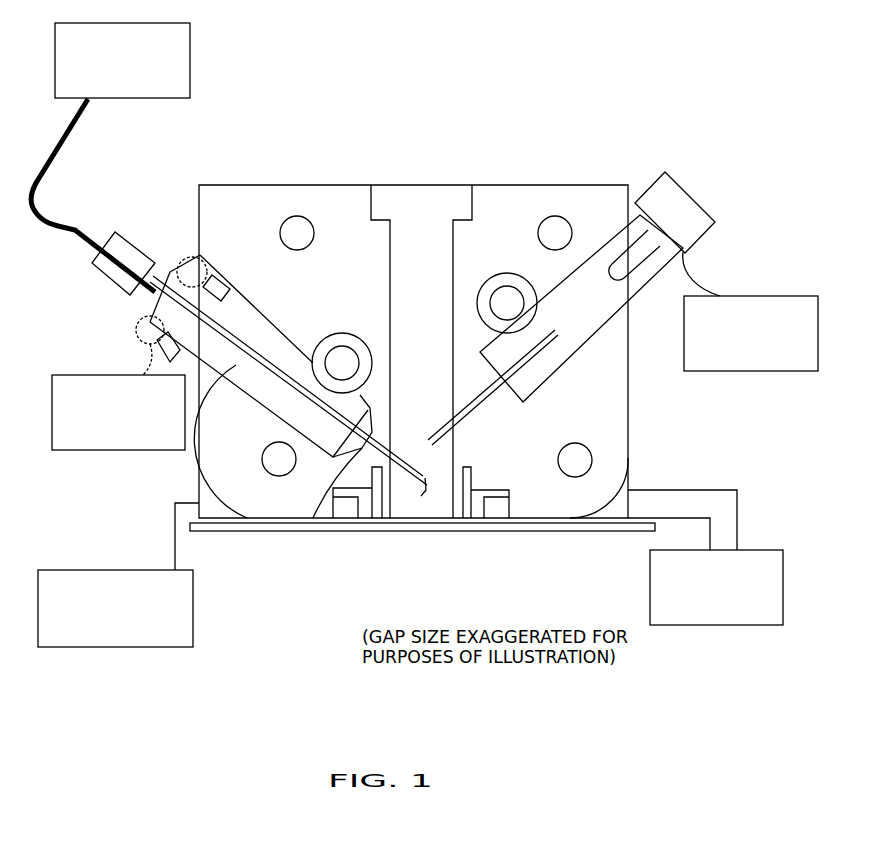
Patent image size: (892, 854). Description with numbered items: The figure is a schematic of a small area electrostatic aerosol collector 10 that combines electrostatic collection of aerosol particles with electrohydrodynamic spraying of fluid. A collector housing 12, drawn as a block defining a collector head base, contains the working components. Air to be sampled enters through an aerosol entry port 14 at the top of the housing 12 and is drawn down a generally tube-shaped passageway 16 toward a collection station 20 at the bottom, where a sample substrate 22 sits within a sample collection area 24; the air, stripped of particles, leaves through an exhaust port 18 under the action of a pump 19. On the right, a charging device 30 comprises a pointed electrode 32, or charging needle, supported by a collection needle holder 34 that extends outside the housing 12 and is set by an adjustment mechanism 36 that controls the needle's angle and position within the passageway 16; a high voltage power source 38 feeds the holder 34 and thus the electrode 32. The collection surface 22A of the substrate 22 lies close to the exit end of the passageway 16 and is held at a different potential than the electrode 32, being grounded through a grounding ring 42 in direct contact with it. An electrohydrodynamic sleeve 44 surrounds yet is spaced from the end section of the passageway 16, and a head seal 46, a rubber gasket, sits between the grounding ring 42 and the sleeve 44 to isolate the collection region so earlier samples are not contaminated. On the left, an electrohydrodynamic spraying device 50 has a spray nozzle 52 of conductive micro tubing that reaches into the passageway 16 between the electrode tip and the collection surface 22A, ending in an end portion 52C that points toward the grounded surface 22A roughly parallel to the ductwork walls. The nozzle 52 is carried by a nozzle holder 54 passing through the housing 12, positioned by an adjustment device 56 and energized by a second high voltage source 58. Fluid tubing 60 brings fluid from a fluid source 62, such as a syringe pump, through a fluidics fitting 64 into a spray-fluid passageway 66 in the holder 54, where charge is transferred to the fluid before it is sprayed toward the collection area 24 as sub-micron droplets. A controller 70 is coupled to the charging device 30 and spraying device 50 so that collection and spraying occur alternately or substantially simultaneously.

The small area electrostatic aerosol collector 10 is at (325, 88).
The collector housing 12 is at (265, 185).
The aerosol entry port 14 is at (388, 185).
The passageway 16 is at (459, 288).
The exhaust port 18 is at (641, 498).
The pump 19 is at (715, 625).
The collection station 20 is at (268, 603).
The sample substrate 22 is at (412, 533).
The collection surface 22A is at (457, 534).
The sample collection area 24 is at (430, 543).
The charging device 30 is at (649, 164).
The electrode 32 is at (470, 410).
The collection needle holder 34 is at (590, 337).
The adjustment mechanism 36 is at (512, 292).
The high voltage power source 38 is at (748, 371).
The grounding ring 42 is at (345, 526).
The electrohydrodynamic sleeve 44 is at (373, 526).
The head seal 46 is at (500, 533).
The electrohydrodynamic spraying device 50 is at (179, 236).
The electrohydrodynamic spray nozzle 52 is at (348, 511).
The end portion 52C is at (421, 496).
The electrohydrodynamic nozzle holder 54 is at (145, 310).
The adjustment device 56 is at (339, 330).
The high voltage source 58 is at (118, 450).
The fluid tubing 60 is at (86, 222).
The fluid source 62 is at (118, 98).
The fluidics fitting 64 is at (133, 235).
The spray-fluid passageway 66 is at (197, 445).
The controller 70 is at (105, 647).